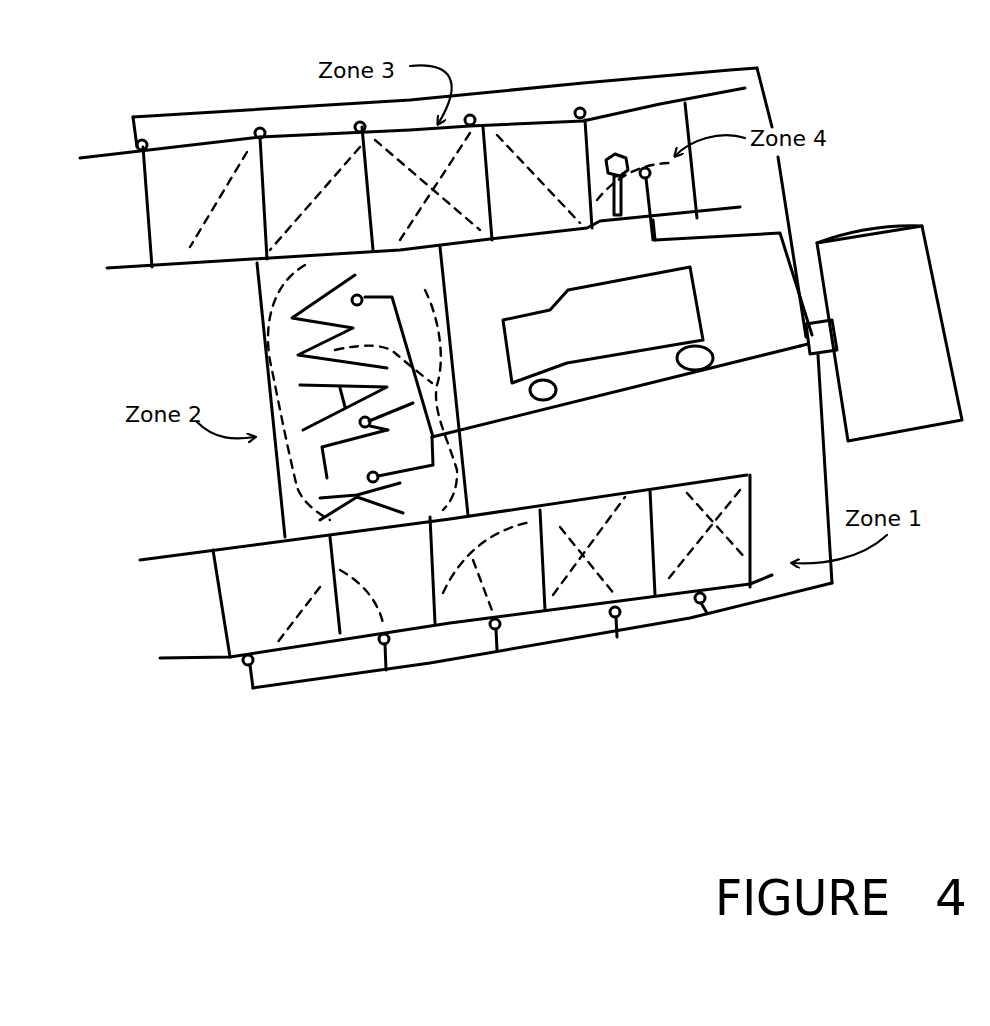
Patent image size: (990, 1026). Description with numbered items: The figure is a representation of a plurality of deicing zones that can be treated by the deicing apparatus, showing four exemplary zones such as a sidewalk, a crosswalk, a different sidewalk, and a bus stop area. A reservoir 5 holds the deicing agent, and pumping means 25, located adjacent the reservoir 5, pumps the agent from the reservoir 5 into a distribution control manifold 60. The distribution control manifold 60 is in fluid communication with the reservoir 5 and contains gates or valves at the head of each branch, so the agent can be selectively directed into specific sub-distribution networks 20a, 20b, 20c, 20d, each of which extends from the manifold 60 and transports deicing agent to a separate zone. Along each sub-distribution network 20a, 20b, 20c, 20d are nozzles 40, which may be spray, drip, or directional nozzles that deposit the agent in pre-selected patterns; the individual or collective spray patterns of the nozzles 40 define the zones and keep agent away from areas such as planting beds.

The reservoir 5 is at (957, 352).
The sub-distribution network 20a is at (779, 602).
The sub-distribution network 20b is at (689, 378).
The sub-distribution network 20c is at (781, 261).
The sub-distribution network 20d is at (684, 71).
The pumping means 25 is at (838, 338).
The nozzle 40 is at (253, 130).
The distribution control manifold 60 is at (804, 355).